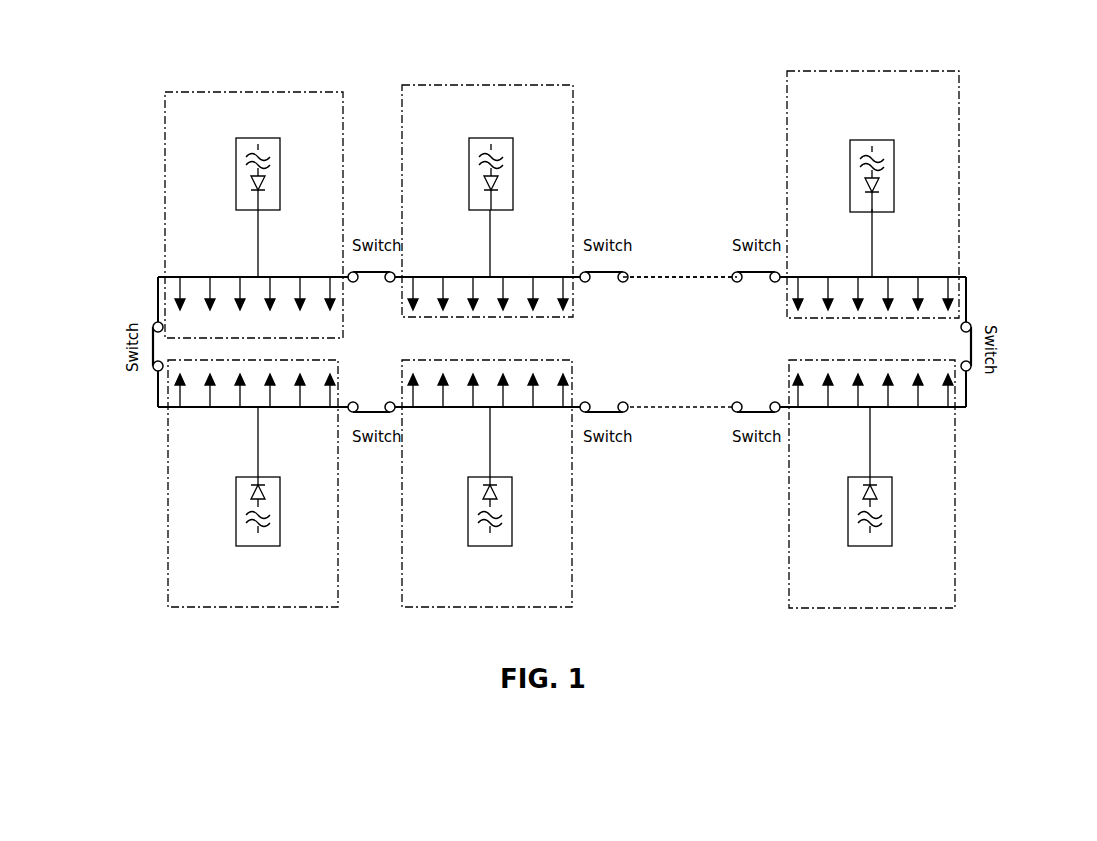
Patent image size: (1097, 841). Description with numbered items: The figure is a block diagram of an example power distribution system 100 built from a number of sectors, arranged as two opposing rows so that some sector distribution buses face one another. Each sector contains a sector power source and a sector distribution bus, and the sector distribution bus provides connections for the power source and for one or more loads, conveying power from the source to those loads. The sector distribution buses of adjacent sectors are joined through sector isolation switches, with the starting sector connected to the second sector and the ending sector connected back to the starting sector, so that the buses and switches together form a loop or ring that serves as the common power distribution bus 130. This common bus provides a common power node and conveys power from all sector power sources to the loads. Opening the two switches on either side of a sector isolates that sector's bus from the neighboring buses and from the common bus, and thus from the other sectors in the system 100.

The power distribution system 100 is at (124, 98).
The common power distribution bus 130 is at (688, 276).